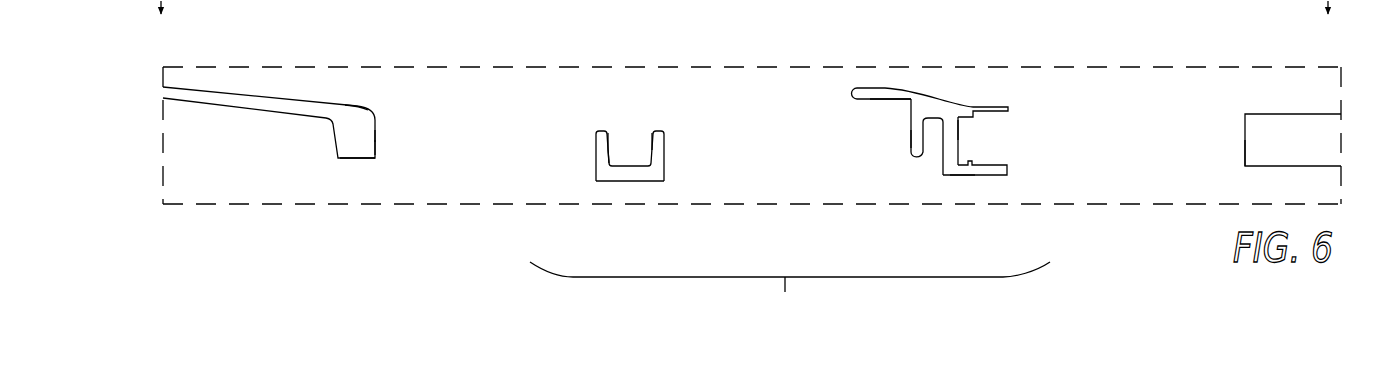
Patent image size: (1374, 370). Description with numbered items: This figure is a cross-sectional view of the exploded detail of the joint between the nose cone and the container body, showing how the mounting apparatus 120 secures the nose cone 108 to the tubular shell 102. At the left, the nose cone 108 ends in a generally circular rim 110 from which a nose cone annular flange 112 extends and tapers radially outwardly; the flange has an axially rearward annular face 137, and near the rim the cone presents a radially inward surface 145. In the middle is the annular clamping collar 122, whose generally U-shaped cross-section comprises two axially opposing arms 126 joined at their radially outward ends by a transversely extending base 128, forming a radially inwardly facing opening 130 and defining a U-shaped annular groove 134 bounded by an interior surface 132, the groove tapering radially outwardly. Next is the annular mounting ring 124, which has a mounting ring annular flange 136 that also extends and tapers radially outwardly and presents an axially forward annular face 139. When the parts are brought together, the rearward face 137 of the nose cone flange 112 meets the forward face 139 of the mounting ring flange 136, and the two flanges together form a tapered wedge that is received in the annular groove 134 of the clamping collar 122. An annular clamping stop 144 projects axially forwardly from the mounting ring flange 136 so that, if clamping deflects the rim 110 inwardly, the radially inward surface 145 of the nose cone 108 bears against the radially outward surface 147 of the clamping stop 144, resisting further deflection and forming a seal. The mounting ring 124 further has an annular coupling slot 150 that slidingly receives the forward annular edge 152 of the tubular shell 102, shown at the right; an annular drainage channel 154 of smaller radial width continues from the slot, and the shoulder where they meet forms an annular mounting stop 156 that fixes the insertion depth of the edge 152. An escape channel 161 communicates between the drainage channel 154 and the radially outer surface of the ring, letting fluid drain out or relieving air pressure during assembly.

The tubular shell 102 is at (1295, 122).
The nose cone 108 is at (268, 105).
The circular rim 110 is at (379, 138).
The nose cone annular flange 112 is at (357, 146).
The mounting apparatus 120 is at (802, 168).
The annular clamping collar 122 is at (628, 160).
The annular mounting ring 124 is at (932, 134).
The axially opposing arms 126 is at (596, 137).
The base 128 is at (638, 173).
The radially inwardly facing opening 130 is at (652, 126).
The interior surface 132 is at (602, 157).
The annular groove 134 is at (636, 148).
The mounting ring annular flange 136 is at (910, 152).
The axially rearward annular face 137 is at (380, 143).
The axially forward annular face 139 is at (909, 137).
The annular clamping stop 144 is at (893, 95).
The radially inward surface 145 is at (355, 100).
The radially outward surface 147 is at (872, 101).
The annular coupling slot 150 is at (1000, 122).
The forward annular edge 152 is at (1258, 138).
The annular drainage channel 154 is at (964, 142).
The annular mounting stop 156 is at (975, 106).
The escape channel 161 is at (963, 178).